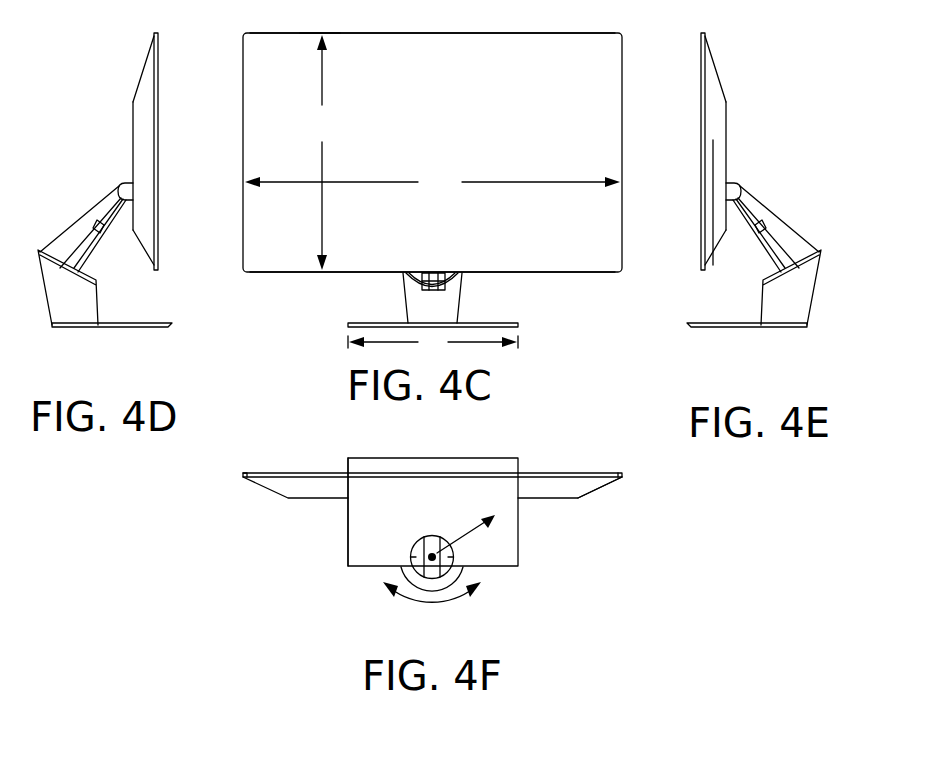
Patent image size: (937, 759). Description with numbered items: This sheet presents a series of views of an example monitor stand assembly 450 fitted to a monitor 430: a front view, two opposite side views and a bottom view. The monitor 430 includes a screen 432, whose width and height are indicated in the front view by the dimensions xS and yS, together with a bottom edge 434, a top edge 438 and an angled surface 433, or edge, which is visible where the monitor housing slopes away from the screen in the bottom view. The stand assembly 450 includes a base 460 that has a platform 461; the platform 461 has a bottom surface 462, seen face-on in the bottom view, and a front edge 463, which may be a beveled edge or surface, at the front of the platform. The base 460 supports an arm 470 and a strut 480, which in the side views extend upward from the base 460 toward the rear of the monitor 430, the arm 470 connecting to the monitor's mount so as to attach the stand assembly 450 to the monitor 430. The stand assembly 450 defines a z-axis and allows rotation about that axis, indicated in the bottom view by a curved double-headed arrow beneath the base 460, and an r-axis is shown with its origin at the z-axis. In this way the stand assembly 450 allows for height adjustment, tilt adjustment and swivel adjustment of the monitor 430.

In FIG. 4C, the monitor 430 is at (603, 134).
In FIG. 4D, the monitor 430 is at (137, 113).
In FIG. 4E, the monitor 430 is at (717, 113).
In FIG. 4F, the monitor 430 is at (579, 499).
In FIG. 4C, the screen 432 is at (432, 152).
In FIG. 4F, the angled surface 433 is at (585, 485).
In FIG. 4C, the bottom edge 434 is at (598, 273).
In FIG. 4C, the top edge 438 is at (598, 33).
In FIG. 4D, the monitor stand assembly 450 is at (111, 365).
In FIG. 4E, the monitor stand assembly 450 is at (754, 358).
In FIG. 4C, the base 460 is at (415, 307).
In FIG. 4D, the base 460 is at (57, 300).
In FIG. 4E, the base 460 is at (805, 305).
In FIG. 4F, the base 460 is at (462, 574).
In FIG. 4C, the platform 461 is at (346, 322).
In FIG. 4D, the platform 461 is at (148, 328).
In FIG. 4E, the platform 461 is at (700, 328).
In FIG. 4F, the platform 461 is at (347, 541).
In FIG. 4F, the bottom surface 462 is at (433, 512).
In FIG. 4C, the front edge 463 is at (352, 2).
In FIG. 4D, the arm 470 is at (98, 212).
In FIG. 4E, the arm 470 is at (772, 222).
In FIG. 4D, the strut 480 is at (90, 250).
In FIG. 4E, the strut 480 is at (770, 250).